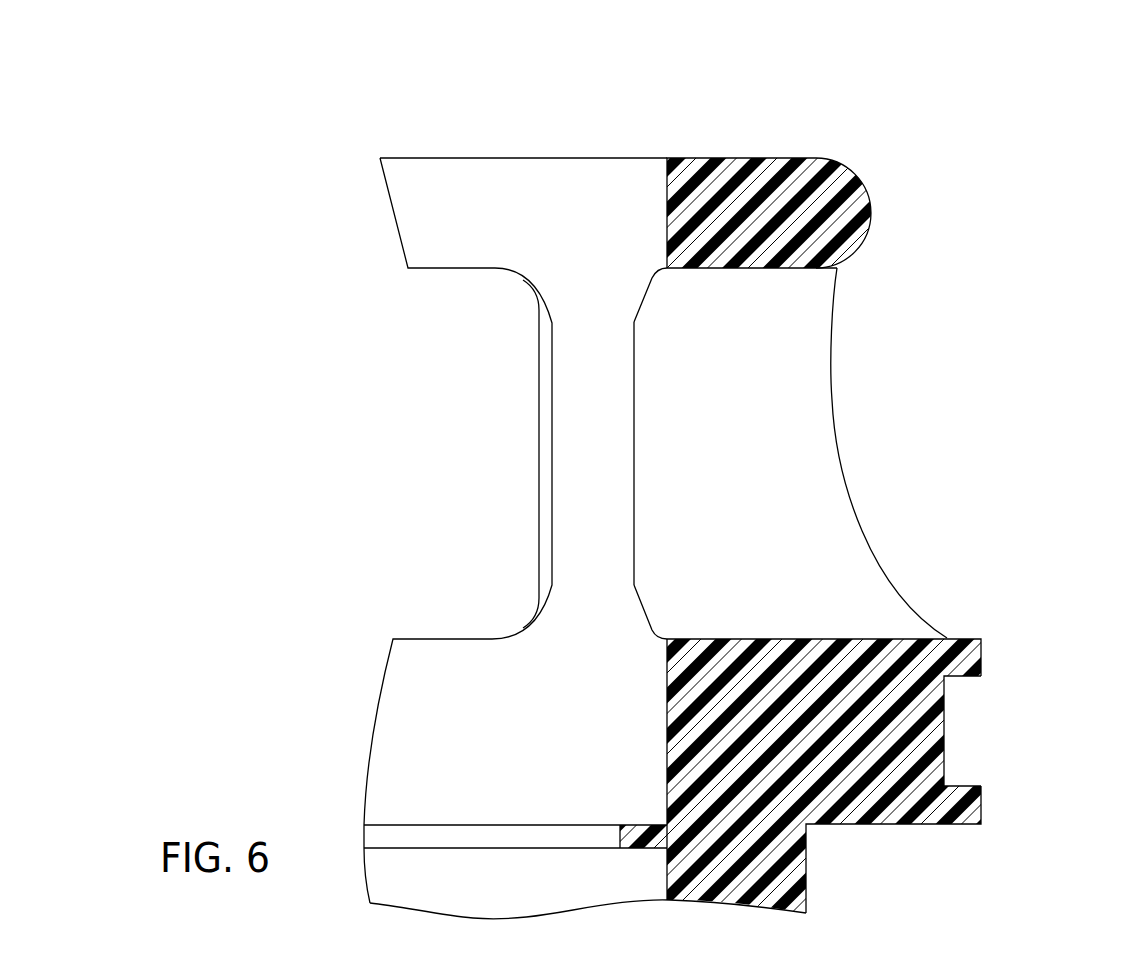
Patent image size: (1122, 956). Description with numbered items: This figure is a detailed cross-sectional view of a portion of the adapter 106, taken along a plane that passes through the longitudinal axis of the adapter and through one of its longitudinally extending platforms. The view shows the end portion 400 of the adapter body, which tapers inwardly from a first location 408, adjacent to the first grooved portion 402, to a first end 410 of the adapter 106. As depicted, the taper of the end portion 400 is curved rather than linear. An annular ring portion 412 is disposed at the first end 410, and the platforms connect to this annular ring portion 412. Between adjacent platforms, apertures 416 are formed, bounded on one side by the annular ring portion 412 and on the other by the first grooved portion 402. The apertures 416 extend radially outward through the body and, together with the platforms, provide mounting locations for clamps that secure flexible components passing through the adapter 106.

The adapter 106 is at (522, 384).
The end portion 400 is at (833, 422).
The first grooved portion 402 is at (947, 729).
The first location 408 is at (967, 638).
The first end 410 is at (727, 158).
The annular ring portion 412 is at (472, 158).
The apertures 416 is at (743, 270).